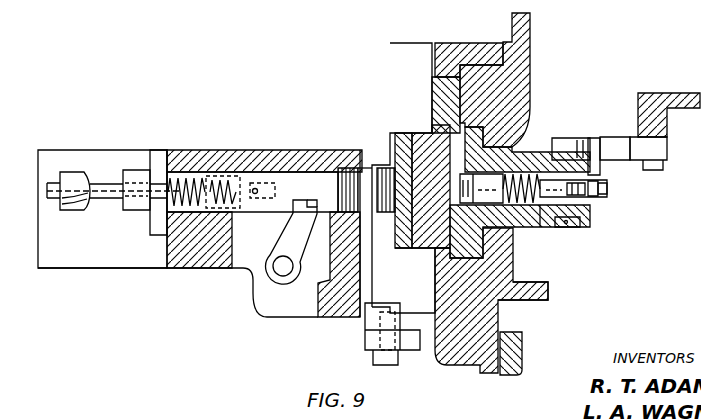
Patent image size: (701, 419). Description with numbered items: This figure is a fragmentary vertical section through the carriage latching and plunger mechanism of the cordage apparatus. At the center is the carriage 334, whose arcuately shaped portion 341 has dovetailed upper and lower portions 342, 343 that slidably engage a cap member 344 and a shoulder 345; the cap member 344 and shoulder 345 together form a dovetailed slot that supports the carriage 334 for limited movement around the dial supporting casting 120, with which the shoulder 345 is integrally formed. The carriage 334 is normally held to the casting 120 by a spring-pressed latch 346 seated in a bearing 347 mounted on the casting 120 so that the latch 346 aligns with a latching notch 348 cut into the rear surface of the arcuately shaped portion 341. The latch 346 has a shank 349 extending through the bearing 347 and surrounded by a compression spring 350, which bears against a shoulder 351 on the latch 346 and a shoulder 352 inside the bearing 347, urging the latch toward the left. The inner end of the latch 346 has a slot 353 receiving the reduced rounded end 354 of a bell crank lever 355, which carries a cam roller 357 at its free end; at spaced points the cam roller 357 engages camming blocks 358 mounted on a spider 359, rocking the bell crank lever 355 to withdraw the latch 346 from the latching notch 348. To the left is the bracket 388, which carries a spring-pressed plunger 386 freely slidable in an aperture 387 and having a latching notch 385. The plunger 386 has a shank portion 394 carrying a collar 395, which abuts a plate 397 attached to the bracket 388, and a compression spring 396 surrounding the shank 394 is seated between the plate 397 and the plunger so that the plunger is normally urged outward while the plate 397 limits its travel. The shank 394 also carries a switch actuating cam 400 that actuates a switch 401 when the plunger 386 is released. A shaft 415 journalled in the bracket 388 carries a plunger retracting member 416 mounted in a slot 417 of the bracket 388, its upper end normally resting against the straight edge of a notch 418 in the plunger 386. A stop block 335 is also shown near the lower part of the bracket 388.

The dial supporting casting 120 is at (548, 288).
The carriage 334 is at (385, 62).
The stop block 335 is at (366, 340).
The arcuately shaped portion 341 is at (430, 140).
The dovetailed upper portion 342 is at (433, 97).
The dovetailed lower portion 343 is at (497, 305).
The cap member 344 is at (458, 48).
The shoulder 345 is at (438, 307).
The spring-pressed latch 346 is at (514, 143).
The bearing 347 is at (490, 170).
The latching notch 348 is at (445, 225).
The shank 349 is at (598, 196).
The compression spring 350 is at (555, 160).
The shoulder 351 is at (521, 207).
The shoulder 352 is at (560, 228).
The slot 353 is at (602, 200).
The reduced rounded end 354 is at (600, 190).
The bell crank lever 355 is at (602, 172).
The cam roller 357 is at (598, 138).
The camming block 358 is at (615, 140).
The spider 359 is at (676, 95).
The latching notch 385 is at (342, 170).
The spring-pressed plunger 386 is at (287, 172).
The aperture 387 is at (250, 176).
The bracket 388 is at (229, 150).
The shank portion 394 is at (107, 199).
The collar 395 is at (136, 172).
The compression spring 396 is at (188, 186).
The plate 397 is at (158, 152).
The switch actuating cam 400 is at (72, 174).
The switch 401 is at (53, 152).
The shaft 415 is at (278, 266).
The plunger retracting member 416 is at (290, 232).
The slot 417 is at (256, 290).
The notch 418 is at (316, 206).